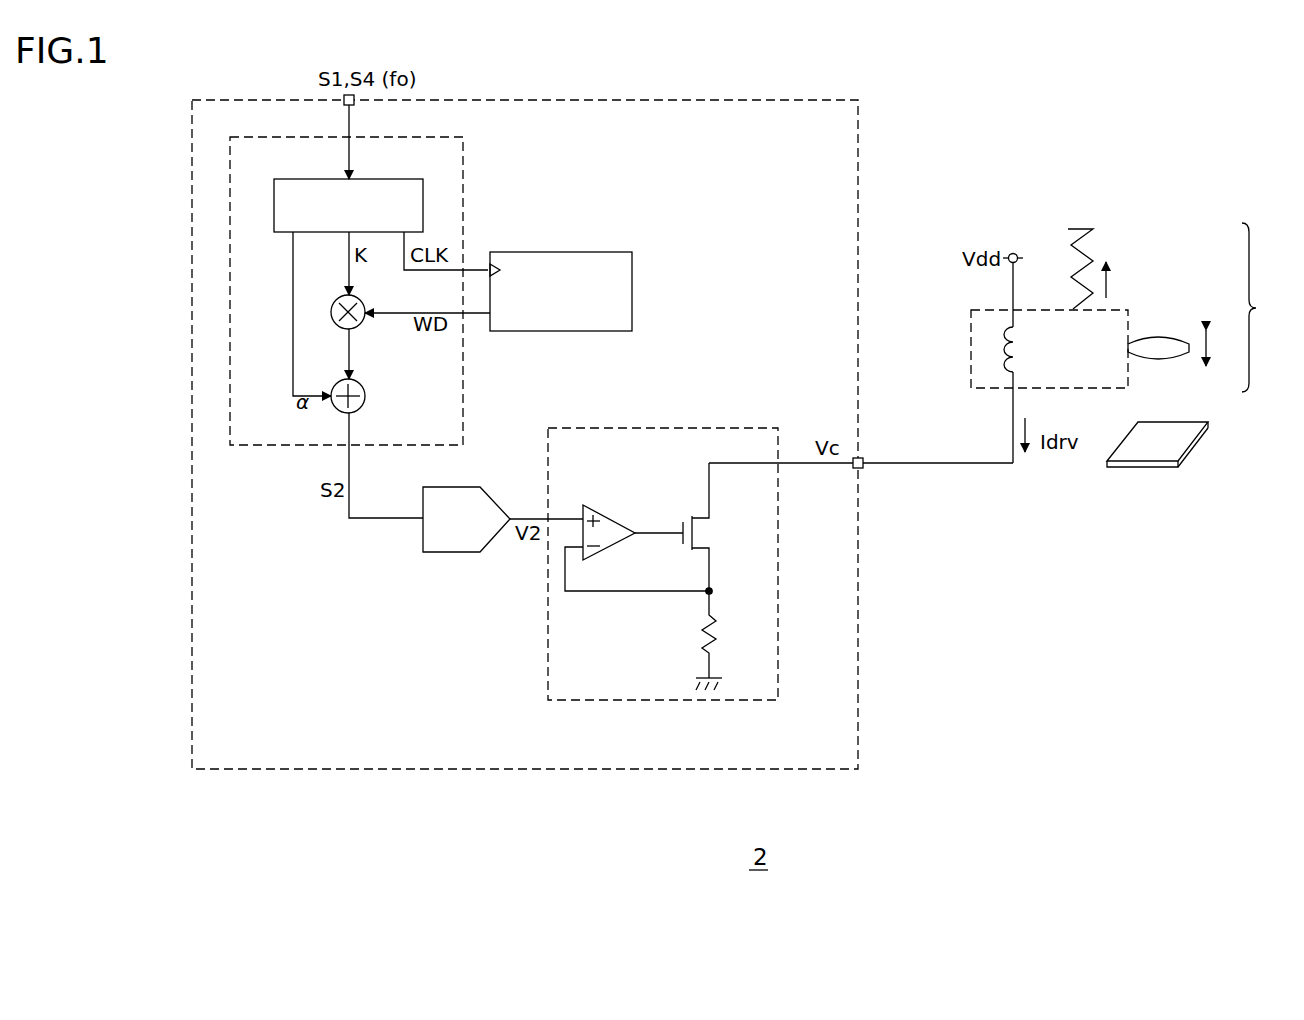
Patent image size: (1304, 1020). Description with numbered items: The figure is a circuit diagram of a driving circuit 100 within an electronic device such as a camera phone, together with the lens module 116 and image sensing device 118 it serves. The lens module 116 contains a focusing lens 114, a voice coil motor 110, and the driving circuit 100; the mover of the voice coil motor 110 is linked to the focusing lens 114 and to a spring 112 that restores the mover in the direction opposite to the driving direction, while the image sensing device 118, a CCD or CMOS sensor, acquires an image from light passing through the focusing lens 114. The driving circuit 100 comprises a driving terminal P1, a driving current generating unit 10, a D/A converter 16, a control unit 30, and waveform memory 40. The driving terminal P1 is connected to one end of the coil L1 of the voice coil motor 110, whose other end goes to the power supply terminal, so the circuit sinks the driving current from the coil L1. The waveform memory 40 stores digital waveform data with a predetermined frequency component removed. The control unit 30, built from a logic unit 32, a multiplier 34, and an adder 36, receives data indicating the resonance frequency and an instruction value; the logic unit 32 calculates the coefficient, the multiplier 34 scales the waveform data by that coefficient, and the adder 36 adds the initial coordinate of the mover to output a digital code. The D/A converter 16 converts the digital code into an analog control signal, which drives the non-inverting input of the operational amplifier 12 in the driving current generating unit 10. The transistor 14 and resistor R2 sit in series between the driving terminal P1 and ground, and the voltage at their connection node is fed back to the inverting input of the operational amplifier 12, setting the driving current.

The driving circuit 100 is at (637, 771).
The control unit 30 is at (250, 447).
The logic unit 32 is at (393, 179).
The multiplier 34 is at (362, 326).
The adder 36 is at (362, 410).
The waveform memory 40 is at (577, 252).
The D/A converter 16 is at (452, 552).
The driving current generating unit 10 is at (612, 702).
The operational amplifier 12 is at (605, 509).
The transistor 14 is at (716, 532).
The resistor R2 is at (722, 636).
The driving terminal P1 is at (866, 455).
The voice coil motor 110 is at (1017, 349).
The coil L1 is at (1026, 340).
The spring 112 is at (1100, 250).
The focusing lens 114 is at (1165, 345).
The lens module 116 is at (1273, 307).
The image sensing device 118 is at (1200, 445).